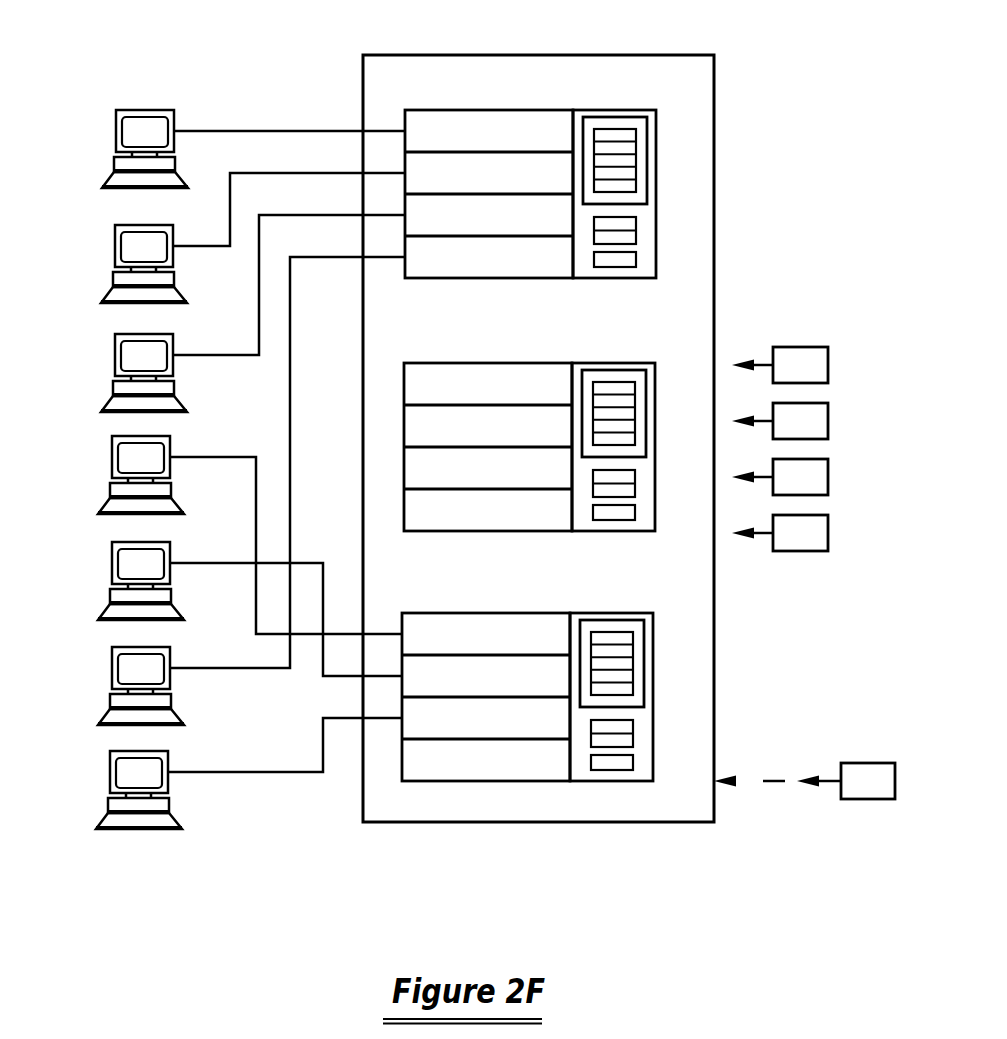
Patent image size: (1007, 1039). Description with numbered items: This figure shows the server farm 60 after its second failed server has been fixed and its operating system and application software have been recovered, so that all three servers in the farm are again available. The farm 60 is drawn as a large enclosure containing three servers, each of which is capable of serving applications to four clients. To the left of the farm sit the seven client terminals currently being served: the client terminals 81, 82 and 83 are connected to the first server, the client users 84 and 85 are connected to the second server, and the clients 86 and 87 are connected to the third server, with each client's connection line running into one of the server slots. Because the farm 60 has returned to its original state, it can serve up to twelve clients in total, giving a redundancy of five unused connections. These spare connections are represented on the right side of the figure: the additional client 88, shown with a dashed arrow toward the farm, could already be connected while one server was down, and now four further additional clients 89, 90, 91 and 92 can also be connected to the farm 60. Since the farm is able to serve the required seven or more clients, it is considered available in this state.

The server farm 60 is at (683, 55).
The client terminal 81 is at (116, 121).
The client terminal 82 is at (115, 236).
The client terminal 83 is at (115, 345).
The client user 84 is at (112, 447).
The client user 85 is at (112, 553).
The client 86 is at (112, 658).
The client 87 is at (110, 762).
The additional client 88 is at (873, 763).
The additional client 89 is at (828, 358).
The additional client 90 is at (828, 414).
The additional client 91 is at (828, 470).
The additional client 92 is at (828, 526).